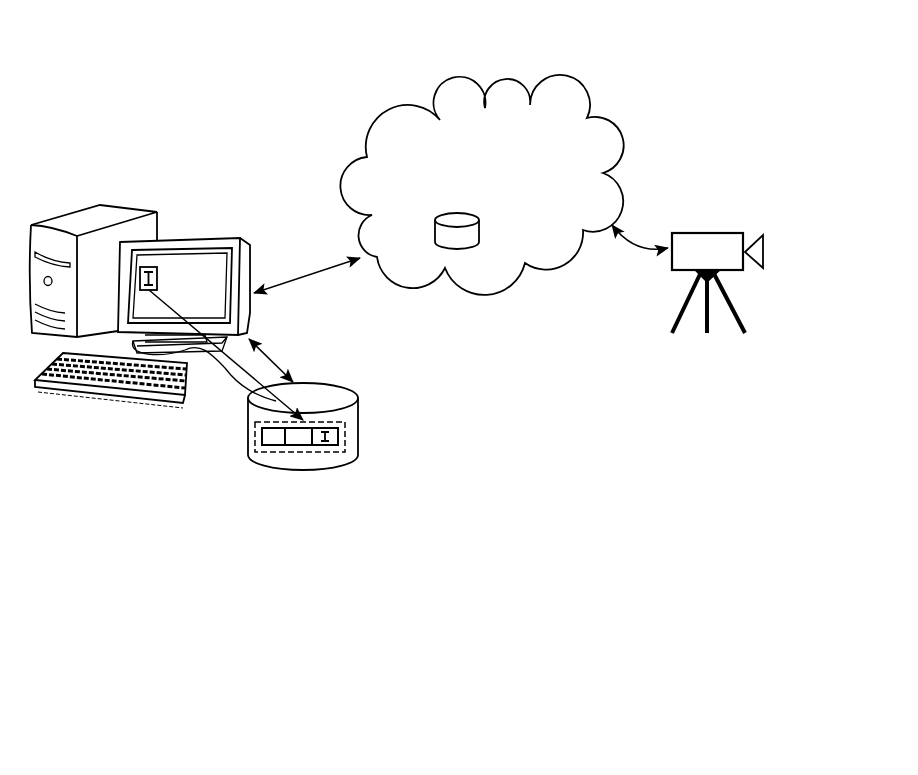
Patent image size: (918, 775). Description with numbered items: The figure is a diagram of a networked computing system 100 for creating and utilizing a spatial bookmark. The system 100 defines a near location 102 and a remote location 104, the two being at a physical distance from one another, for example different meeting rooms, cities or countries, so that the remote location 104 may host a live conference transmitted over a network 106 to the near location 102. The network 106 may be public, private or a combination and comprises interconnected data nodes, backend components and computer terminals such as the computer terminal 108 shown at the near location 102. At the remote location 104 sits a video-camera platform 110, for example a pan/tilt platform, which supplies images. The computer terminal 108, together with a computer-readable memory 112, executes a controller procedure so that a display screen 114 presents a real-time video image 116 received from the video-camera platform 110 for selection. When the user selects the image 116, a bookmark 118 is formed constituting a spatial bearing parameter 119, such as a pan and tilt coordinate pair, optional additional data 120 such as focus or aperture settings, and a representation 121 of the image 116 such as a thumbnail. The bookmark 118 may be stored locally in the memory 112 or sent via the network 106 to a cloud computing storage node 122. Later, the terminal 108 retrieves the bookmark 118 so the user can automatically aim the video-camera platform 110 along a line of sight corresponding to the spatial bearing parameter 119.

The system 100 is at (225, 41).
The near location 102 is at (138, 581).
The remote location 104 is at (737, 145).
The network 106 is at (512, 85).
The computer terminal 108 is at (129, 207).
The video-camera platform 110 is at (708, 232).
The computer-readable memory 112 is at (360, 432).
The display screen 114 is at (233, 238).
The real-time video image 116 is at (158, 279).
The bookmark 118 is at (256, 435).
The spatial bearing parameter 119 is at (270, 442).
The additional data 120 is at (298, 444).
The representation of image 121 is at (332, 444).
The cloud computing storage node 122 is at (481, 232).